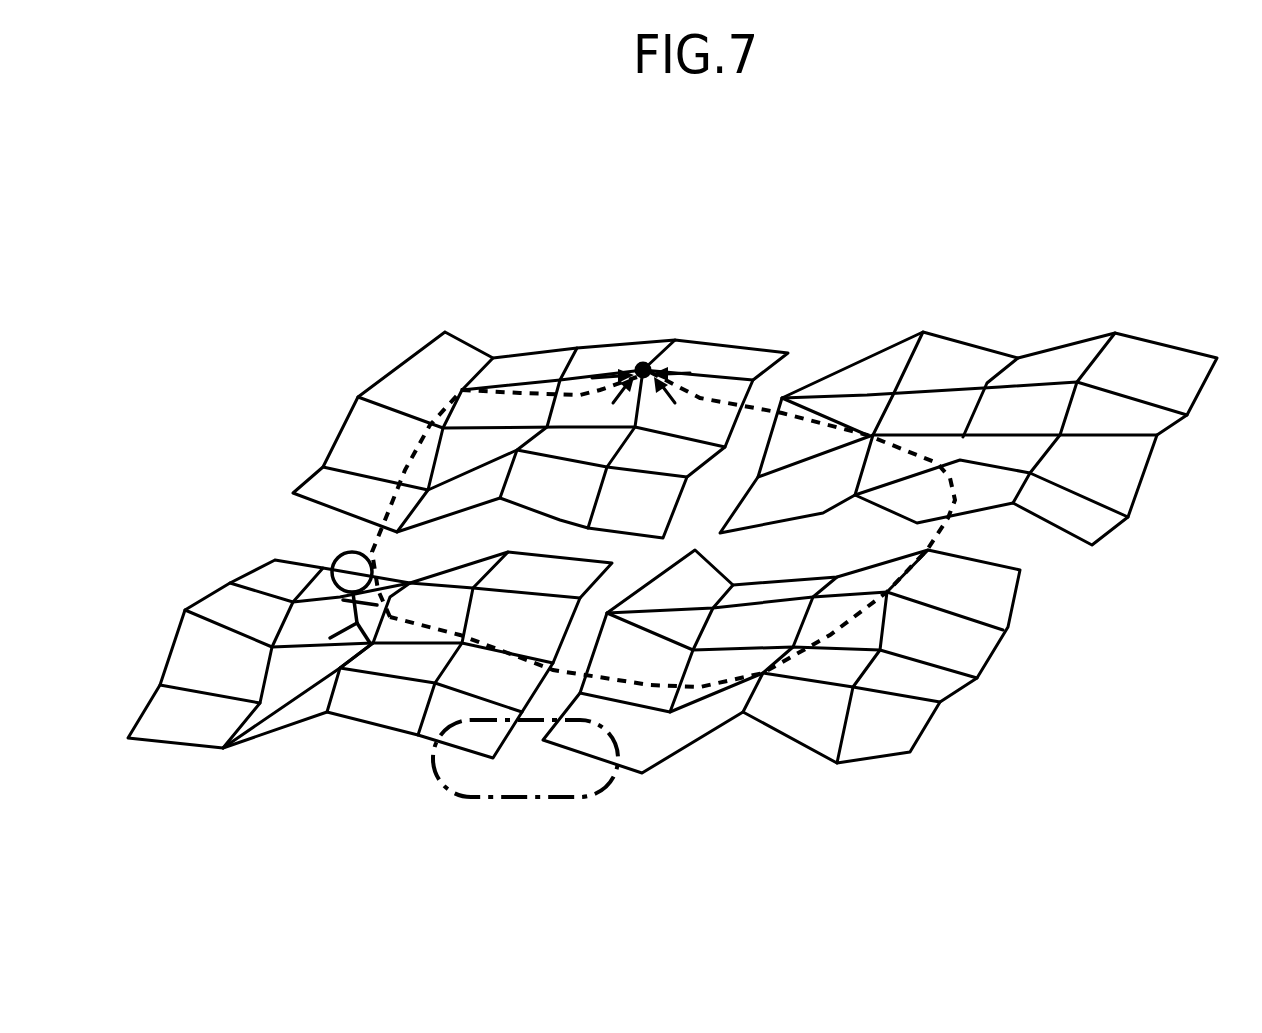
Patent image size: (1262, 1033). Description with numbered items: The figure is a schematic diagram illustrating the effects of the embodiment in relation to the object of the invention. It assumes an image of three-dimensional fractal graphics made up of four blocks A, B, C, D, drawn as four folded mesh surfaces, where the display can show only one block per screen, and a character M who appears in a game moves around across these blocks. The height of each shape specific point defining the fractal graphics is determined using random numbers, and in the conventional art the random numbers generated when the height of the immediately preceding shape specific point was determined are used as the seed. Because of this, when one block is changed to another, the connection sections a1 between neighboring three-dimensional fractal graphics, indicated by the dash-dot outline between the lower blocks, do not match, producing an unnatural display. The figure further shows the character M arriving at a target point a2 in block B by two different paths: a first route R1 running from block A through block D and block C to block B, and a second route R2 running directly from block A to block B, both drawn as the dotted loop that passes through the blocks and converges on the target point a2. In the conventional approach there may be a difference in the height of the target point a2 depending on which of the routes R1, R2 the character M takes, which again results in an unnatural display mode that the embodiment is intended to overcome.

The block A is at (272, 730).
The block B is at (725, 345).
The block C is at (965, 342).
The block D is at (700, 740).
The character M is at (333, 557).
The first route R1 is at (937, 533).
The second route R2 is at (417, 447).
The connection sections a1 is at (530, 810).
The target point a2 is at (642, 362).